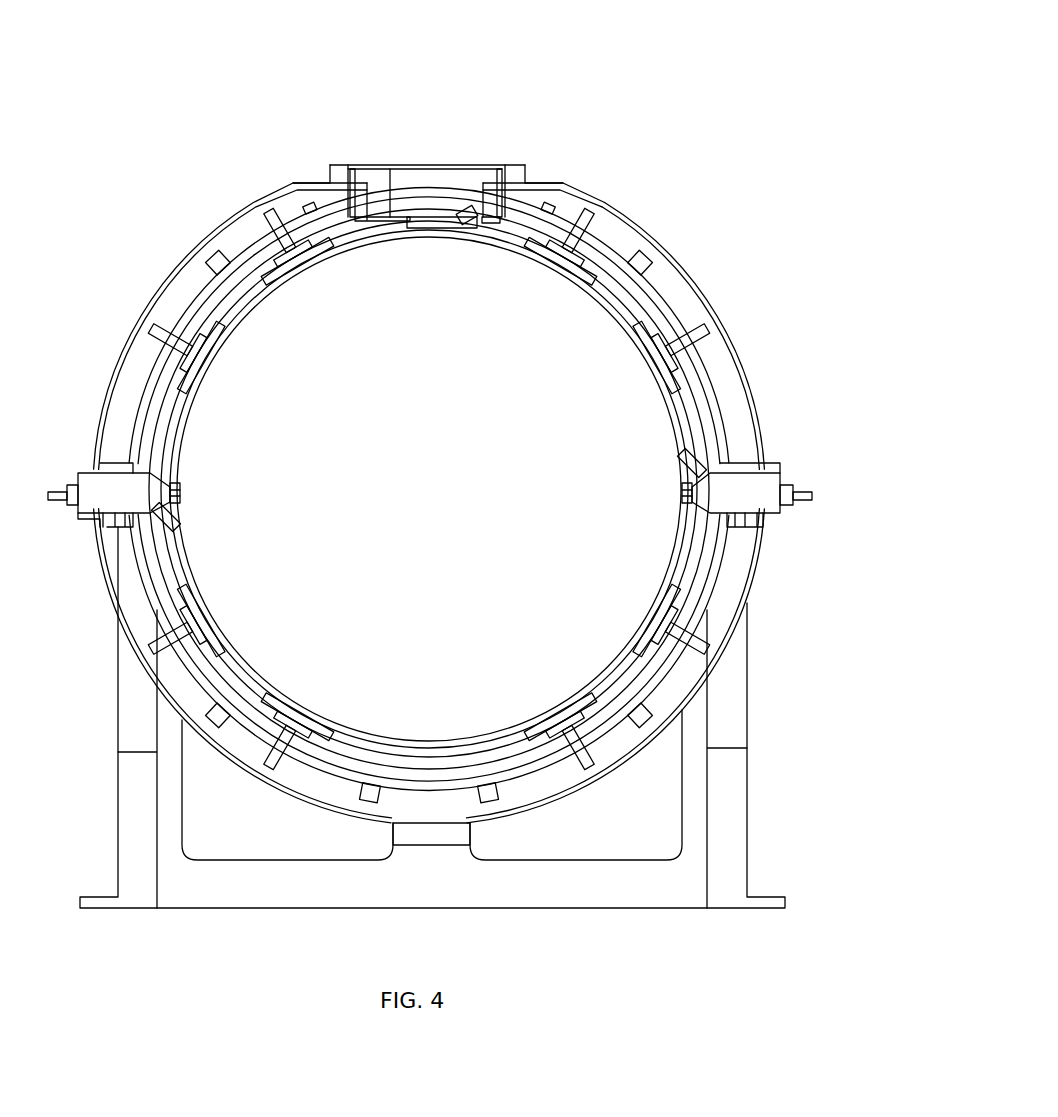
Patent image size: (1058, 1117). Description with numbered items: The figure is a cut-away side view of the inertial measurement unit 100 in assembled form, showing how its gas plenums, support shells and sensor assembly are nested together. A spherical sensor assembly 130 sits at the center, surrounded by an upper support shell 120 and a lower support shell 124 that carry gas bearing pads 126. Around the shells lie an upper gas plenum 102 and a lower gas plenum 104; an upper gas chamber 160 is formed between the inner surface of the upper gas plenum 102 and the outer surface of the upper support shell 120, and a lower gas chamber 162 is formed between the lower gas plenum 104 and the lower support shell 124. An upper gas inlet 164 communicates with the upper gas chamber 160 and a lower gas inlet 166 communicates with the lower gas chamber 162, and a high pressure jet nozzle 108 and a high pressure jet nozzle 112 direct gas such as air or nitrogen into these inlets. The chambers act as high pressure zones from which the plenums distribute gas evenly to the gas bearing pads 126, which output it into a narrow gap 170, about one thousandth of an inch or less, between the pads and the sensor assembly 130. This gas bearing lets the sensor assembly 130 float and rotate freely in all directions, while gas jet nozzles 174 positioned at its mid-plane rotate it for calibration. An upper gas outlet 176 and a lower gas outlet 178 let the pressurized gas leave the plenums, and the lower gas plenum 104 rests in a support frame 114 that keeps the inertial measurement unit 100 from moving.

The inertial measurement unit 100 is at (628, 111).
The upper gas plenum 102 is at (125, 353).
The lower gas plenum 104 is at (103, 577).
The high pressure jet nozzle 108 is at (798, 495).
The high pressure jet nozzle 112 is at (52, 503).
The support frame 114 is at (128, 865).
The upper support shell 120 is at (138, 442).
The lower support shell 124 is at (153, 585).
The gas bearing pads 126 is at (260, 225).
The sensor assembly 130 is at (454, 492).
The upper gas chamber 160 is at (735, 395).
The lower gas chamber 162 is at (308, 793).
The upper gas inlet 164 is at (762, 480).
The lower gas inlet 166 is at (95, 487).
The narrow gap 170 is at (220, 640).
The gas jet nozzles 174 is at (172, 520).
The upper gas outlet 176 is at (507, 165).
The lower gas outlet 178 is at (430, 835).